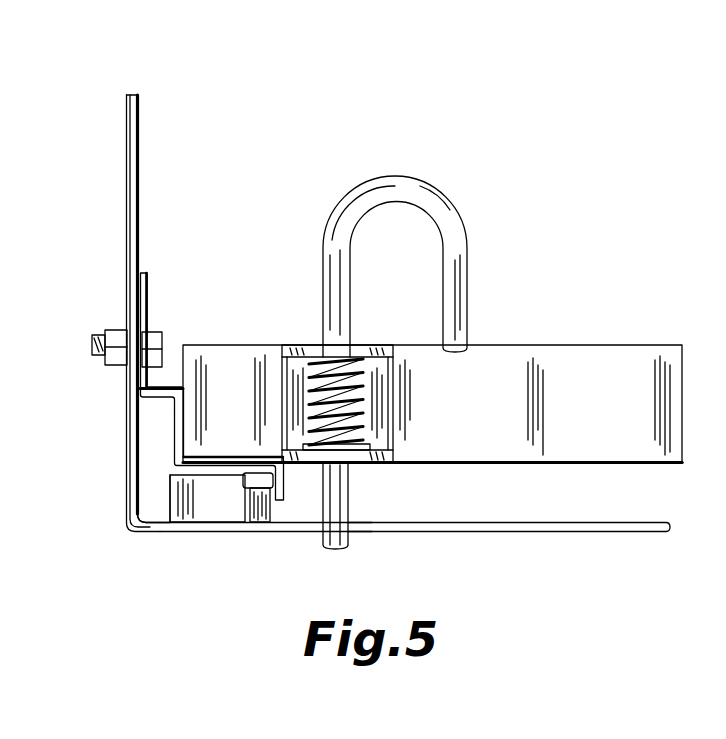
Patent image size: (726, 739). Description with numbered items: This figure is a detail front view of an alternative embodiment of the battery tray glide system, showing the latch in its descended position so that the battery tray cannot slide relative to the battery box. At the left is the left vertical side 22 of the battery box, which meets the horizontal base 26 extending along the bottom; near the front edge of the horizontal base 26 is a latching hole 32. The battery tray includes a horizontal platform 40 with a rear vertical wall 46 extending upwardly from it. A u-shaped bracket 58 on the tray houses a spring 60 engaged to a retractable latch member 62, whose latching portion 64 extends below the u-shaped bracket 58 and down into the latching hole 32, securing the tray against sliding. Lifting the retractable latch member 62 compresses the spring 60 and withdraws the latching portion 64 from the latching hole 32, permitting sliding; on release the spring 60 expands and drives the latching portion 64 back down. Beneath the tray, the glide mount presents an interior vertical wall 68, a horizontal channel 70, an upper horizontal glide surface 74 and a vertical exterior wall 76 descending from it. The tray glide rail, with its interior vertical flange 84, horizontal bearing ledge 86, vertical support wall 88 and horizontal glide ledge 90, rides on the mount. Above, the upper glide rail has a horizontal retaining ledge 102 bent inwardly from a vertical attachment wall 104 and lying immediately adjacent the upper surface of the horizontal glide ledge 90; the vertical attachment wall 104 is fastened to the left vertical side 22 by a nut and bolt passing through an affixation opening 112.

The left vertical side 22 is at (126, 178).
The horizontal base 26 is at (578, 531).
The latching hole 32 is at (357, 515).
The horizontal platform 40 is at (650, 465).
The rear vertical wall 46 is at (586, 378).
The u-shaped bracket 58 is at (313, 345).
The spring 60 is at (363, 427).
The retractable latch member 62 is at (420, 192).
The latching portion 64 is at (350, 547).
The interior vertical wall 68 is at (268, 505).
The horizontal channel 70 is at (267, 488).
The upper horizontal glide surface 74 is at (170, 502).
The vertical exterior wall 76 is at (165, 508).
The interior vertical flange 84 is at (287, 487).
The horizontal bearing ledge 86 is at (212, 474).
The vertical support wall 88 is at (172, 447).
The horizontal glide ledge 90 is at (163, 400).
The horizontal retaining ledge 102 is at (172, 378).
The vertical attachment wall 104 is at (144, 288).
The affixation opening 112 is at (120, 318).